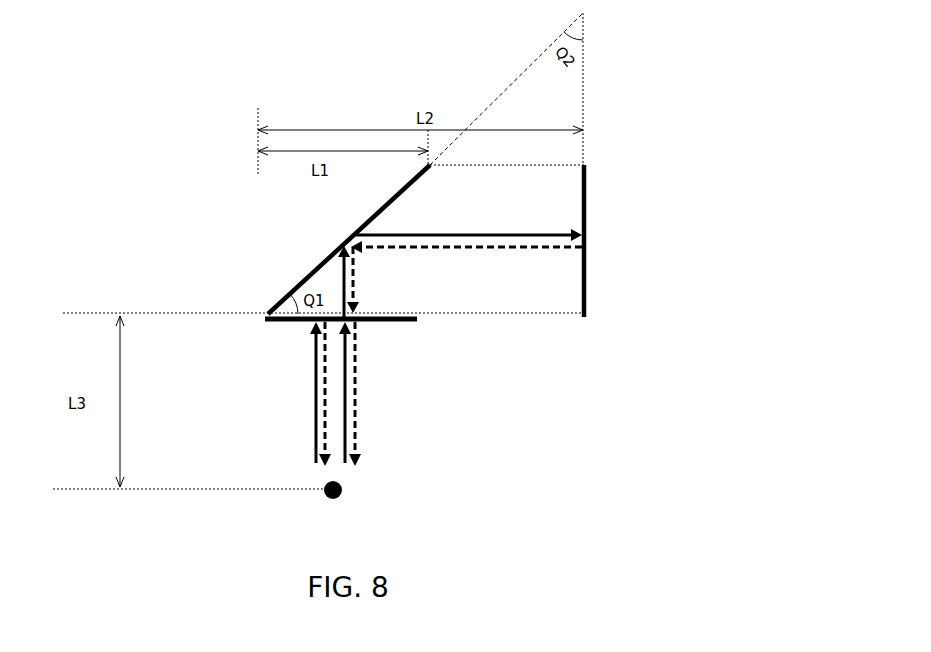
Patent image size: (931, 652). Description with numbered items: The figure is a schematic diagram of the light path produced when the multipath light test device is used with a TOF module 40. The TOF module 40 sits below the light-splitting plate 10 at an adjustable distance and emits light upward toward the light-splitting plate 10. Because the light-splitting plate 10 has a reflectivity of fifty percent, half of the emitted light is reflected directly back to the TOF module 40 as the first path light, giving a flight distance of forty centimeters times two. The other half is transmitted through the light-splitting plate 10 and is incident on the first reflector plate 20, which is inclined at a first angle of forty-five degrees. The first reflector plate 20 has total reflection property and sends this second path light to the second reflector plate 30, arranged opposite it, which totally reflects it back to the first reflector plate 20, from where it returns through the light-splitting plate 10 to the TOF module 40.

The light-splitting plate 10 is at (400, 323).
The first reflector plate 20 is at (307, 275).
The second reflector plate 30 is at (588, 273).
The TOF module 40 is at (335, 504).